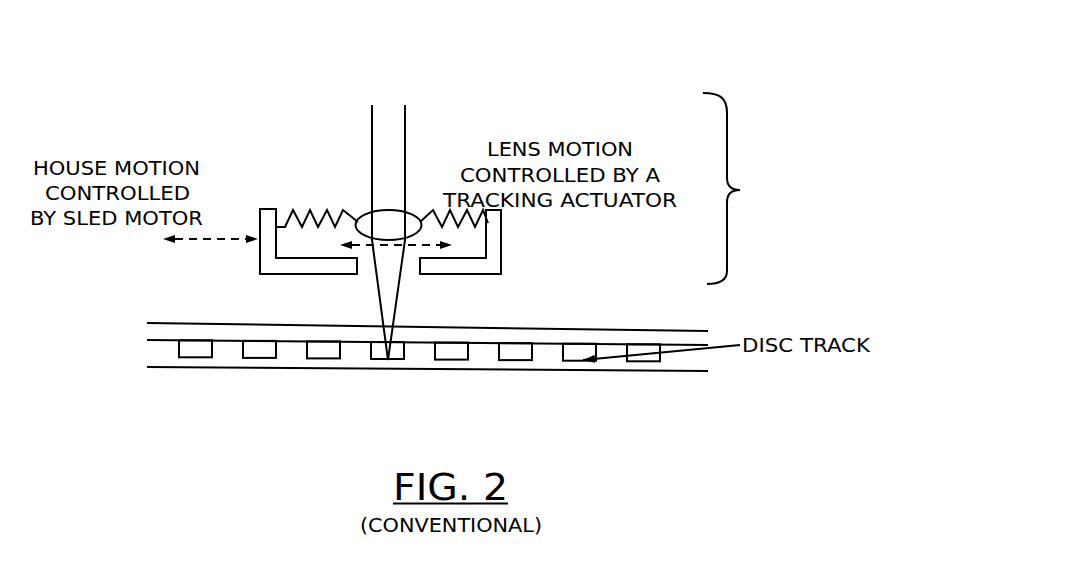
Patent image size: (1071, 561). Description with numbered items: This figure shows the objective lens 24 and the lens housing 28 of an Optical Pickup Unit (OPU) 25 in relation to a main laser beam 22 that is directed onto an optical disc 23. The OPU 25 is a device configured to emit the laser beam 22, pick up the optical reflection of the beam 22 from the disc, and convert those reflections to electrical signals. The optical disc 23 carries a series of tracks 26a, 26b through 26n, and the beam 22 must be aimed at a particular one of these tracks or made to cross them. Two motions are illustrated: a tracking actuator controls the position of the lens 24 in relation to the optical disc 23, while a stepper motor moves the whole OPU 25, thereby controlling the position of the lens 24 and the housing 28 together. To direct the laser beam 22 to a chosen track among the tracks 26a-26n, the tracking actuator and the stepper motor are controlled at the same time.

The main laser beam 22 is at (405, 148).
The optical disc 23 is at (523, 332).
The objective lens 24 is at (373, 210).
The Optical Pickup Unit (OPU) 25 is at (740, 190).
The track 26a is at (197, 358).
The track 26b is at (262, 358).
The track 26n is at (643, 362).
The lens housing 28 is at (503, 275).